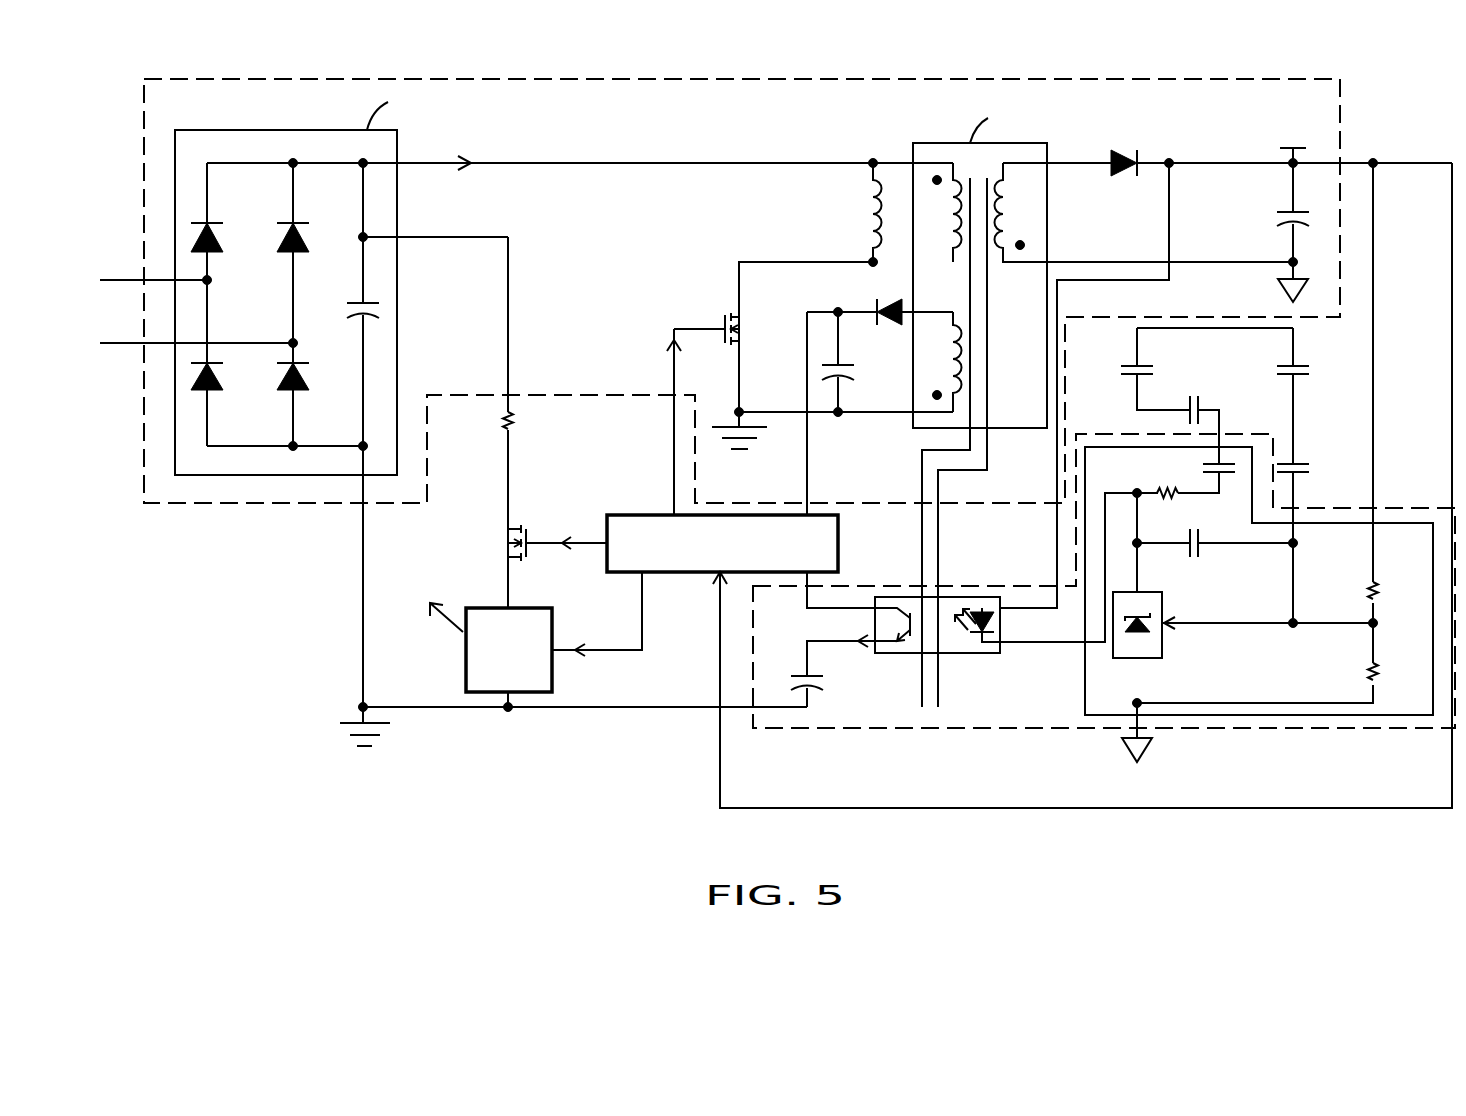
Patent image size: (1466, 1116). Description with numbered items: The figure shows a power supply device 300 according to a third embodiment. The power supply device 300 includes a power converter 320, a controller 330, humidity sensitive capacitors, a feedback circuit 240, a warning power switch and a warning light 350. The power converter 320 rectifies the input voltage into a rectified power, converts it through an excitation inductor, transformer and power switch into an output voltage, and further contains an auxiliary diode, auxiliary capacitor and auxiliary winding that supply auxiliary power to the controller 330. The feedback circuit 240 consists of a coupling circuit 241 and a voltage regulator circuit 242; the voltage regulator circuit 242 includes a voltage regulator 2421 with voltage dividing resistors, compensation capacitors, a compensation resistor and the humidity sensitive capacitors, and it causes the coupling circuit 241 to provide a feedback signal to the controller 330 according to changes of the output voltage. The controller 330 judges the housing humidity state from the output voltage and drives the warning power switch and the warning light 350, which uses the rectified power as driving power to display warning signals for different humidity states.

The power supply device 300 is at (1465, 868).
The power converter 320 is at (1270, 78).
The controller 330 is at (838, 545).
The warning light 350 is at (533, 608).
The feedback circuit 240 is at (890, 728).
The coupling circuit 241 is at (890, 653).
The voltage regulator circuit 242 is at (1085, 695).
The voltage regulator 2421 is at (1162, 645).